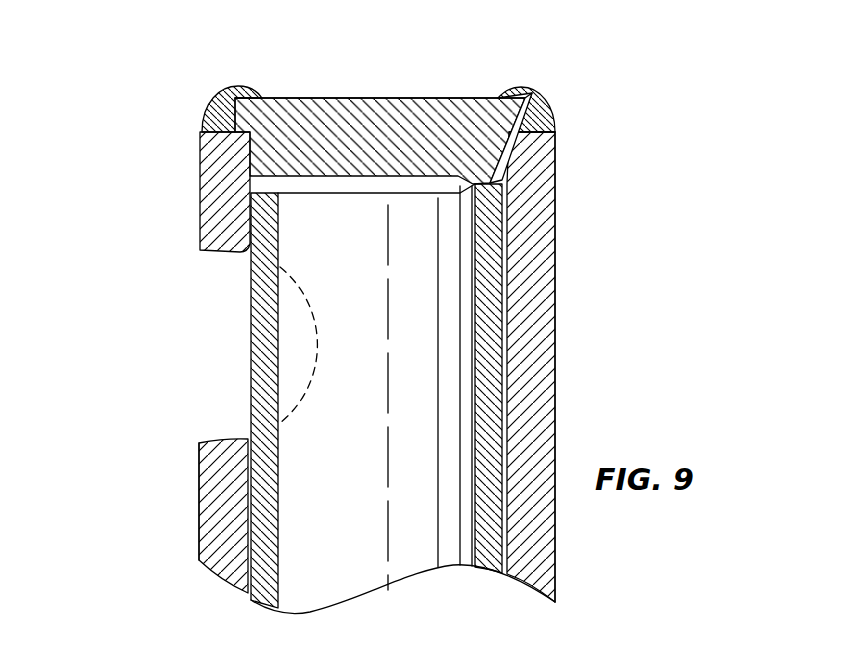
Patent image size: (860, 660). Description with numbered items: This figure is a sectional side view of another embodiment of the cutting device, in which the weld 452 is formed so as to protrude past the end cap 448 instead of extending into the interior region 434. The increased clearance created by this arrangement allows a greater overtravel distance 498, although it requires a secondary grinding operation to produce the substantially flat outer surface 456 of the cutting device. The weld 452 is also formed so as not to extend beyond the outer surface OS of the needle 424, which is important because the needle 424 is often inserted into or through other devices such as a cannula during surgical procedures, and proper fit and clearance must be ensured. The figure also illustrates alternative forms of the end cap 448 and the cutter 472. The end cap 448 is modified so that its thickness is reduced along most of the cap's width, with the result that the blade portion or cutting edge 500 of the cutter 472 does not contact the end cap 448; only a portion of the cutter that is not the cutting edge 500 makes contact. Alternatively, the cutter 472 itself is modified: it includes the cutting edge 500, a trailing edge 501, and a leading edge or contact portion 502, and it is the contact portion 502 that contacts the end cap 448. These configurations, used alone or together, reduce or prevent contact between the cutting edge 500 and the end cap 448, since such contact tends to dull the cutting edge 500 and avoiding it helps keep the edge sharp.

The cutting edge 500 is at (250, 173).
The end cap 448 is at (420, 137).
The outer surface 456 is at (320, 97).
The weld 452 is at (509, 160).
The needle 424 is at (540, 387).
The contact portion 502 is at (532, 93).
The interior region 434 is at (433, 285).
The trailing edge 501 is at (328, 203).
The cutter 472 is at (260, 488).
The outer surface of the needle OS is at (555, 215).
The overtravel distance 498 is at (158, 155).